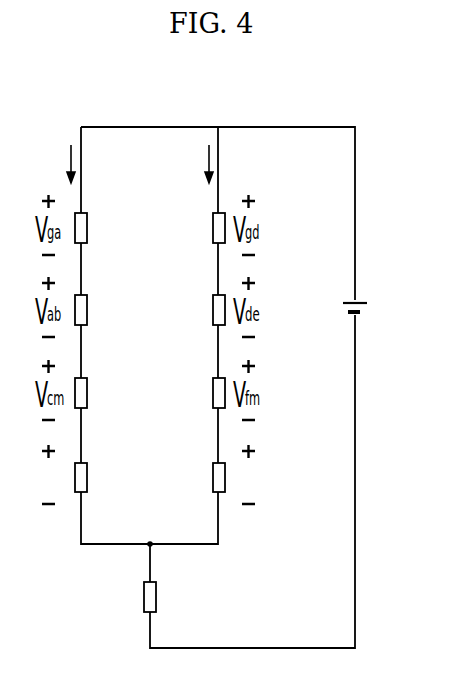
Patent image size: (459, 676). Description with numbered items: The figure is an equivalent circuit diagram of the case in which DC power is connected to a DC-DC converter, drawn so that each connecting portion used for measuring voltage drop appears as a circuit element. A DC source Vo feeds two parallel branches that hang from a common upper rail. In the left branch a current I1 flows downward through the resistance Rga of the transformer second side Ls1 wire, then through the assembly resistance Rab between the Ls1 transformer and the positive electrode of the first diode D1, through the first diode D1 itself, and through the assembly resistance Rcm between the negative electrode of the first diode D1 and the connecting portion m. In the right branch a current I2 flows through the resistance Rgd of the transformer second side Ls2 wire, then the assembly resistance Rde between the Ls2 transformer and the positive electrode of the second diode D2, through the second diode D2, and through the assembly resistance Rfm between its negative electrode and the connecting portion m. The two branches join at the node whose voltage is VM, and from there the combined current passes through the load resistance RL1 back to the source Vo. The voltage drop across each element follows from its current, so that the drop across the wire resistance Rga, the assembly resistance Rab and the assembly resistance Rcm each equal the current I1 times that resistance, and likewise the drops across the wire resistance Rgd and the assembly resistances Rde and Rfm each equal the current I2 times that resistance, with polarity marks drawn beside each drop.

The resistance of transformer second side Ls1 wire Rga is at (99, 230).
The assembly resistance Rab is at (99, 312).
The assembly resistance Rcm is at (101, 395).
The first diode D1 is at (61, 479).
The resistance of transformer second side Ls2 wire Rgd is at (197, 230).
The assembly resistance Rde is at (197, 312).
The assembly resistance Rfm is at (197, 395).
The second diode D2 is at (237, 479).
The load resistance RL1 is at (170, 598).
The DC power source voltage Vo is at (368, 305).
The voltage at connecting portion m VM is at (146, 525).
The first branch current I1 is at (52, 146).
The second branch current I2 is at (189, 146).